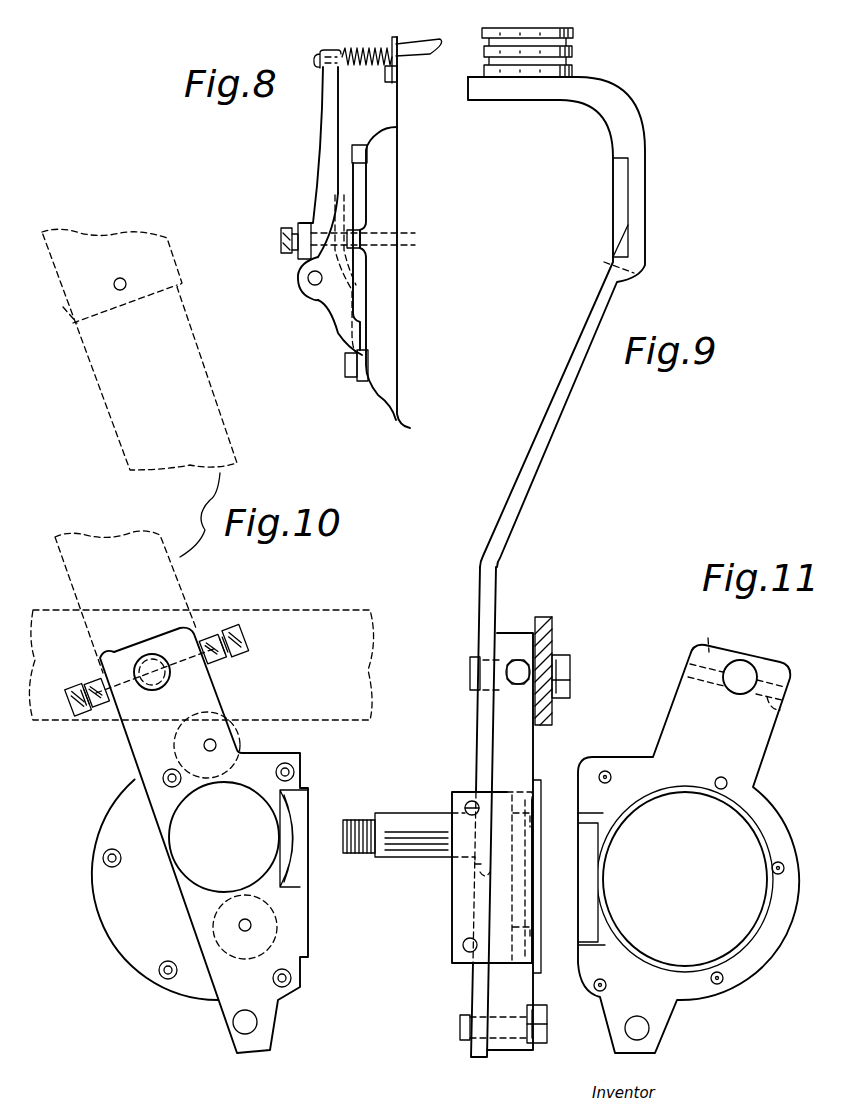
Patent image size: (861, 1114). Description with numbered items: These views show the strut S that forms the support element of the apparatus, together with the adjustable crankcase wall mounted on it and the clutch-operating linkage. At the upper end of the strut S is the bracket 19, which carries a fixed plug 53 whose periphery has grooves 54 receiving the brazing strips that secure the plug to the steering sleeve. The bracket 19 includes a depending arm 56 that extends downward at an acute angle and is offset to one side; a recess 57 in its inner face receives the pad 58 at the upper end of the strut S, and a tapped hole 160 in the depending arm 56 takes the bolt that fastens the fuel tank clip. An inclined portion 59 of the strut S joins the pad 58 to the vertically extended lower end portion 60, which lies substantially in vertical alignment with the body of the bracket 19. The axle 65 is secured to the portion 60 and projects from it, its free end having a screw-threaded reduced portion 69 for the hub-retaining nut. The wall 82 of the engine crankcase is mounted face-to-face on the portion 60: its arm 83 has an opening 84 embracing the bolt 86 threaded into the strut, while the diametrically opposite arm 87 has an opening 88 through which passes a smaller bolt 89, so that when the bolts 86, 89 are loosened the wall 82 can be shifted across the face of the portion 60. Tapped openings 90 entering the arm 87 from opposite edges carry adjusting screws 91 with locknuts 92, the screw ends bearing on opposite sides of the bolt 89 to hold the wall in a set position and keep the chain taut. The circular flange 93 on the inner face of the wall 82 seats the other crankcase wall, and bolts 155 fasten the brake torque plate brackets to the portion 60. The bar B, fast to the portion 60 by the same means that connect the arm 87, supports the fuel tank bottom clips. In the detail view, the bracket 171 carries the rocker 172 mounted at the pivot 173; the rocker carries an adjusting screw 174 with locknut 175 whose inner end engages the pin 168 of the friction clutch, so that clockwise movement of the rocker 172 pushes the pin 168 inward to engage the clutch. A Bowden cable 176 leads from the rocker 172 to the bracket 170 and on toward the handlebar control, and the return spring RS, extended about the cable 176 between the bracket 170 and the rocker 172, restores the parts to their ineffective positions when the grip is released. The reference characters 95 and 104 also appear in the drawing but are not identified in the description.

In FIG. 9, the bracket 19 is at (500, 90).
In FIG. 9, the plug 53 is at (567, 53).
In FIG. 9, the grooves 54 is at (565, 62).
In FIG. 8, the depending arm 56 is at (66, 313).
In FIG. 9, the depending arm 56 is at (625, 127).
In FIG. 9, the recess 57 is at (627, 228).
In FIG. 9, the pad 58 is at (613, 190).
In FIG. 8, the inclined portion 59 is at (117, 427).
In FIG. 9, the inclined portion 59 is at (555, 422).
In FIG. 9, the lower end portion 60 is at (485, 733).
In FIG. 9, the axle 65 is at (394, 845).
In FIG. 9, the reduced portion 69 is at (357, 818).
In FIG. 9, the wall 82 is at (517, 752).
In FIG. 10, the wall 82 is at (118, 808).
In FIG. 11, the wall 82 is at (782, 914).
In FIG. 10, the arm 83 is at (262, 1044).
In FIG. 11, the arm 83 is at (660, 1050).
In FIG. 10, the opening 84 is at (258, 1018).
In FIG. 11, the opening 84 is at (648, 1028).
In FIG. 9, the bolt 86 is at (547, 1025).
In FIG. 11, the arm 87 is at (768, 732).
In FIG. 10, the opening 88 is at (152, 690).
In FIG. 11, the opening 88 is at (750, 666).
In FIG. 9, the bolt 89 is at (567, 658).
In FIG. 10, the bolt 89 is at (155, 650).
In FIG. 10, the tapped openings 90 is at (207, 683).
In FIG. 11, the tapped openings 90 is at (795, 715).
In FIG. 9, the adjusting screws 91 is at (512, 668).
In FIG. 10, the adjusting screws 91 is at (77, 702).
In FIG. 10, the locknuts 92 is at (100, 675).
In FIG. 11, the circular flange 93 is at (737, 943).
In FIG. 11, the pin hole 95 is at (735, 768).
In FIG. 8, the plate 104 is at (380, 295).
In FIG. 10, the bolts 155 is at (216, 745).
In FIG. 8, the tapped hole 160 is at (123, 290).
In FIG. 9, the tapped hole 160 is at (640, 274).
In FIG. 8, the pin 168 is at (362, 237).
In FIG. 8, the bracket 170 is at (396, 36).
In FIG. 8, the bracket 171 is at (343, 333).
In FIG. 8, the rocker 172 is at (332, 122).
In FIG. 8, the pivot 173 is at (315, 283).
In FIG. 8, the adjusting screw 174 is at (280, 243).
In FIG. 8, the locknut 175 is at (308, 222).
In FIG. 8, the Bowden cable 176 is at (350, 46).
In FIG. 8, the return spring RS is at (360, 67).
In FIG. 8, the strut S is at (208, 420).
In FIG. 9, the strut S is at (495, 585).
In FIG. 9, the bar B is at (547, 617).
In FIG. 10, the bar B is at (307, 610).